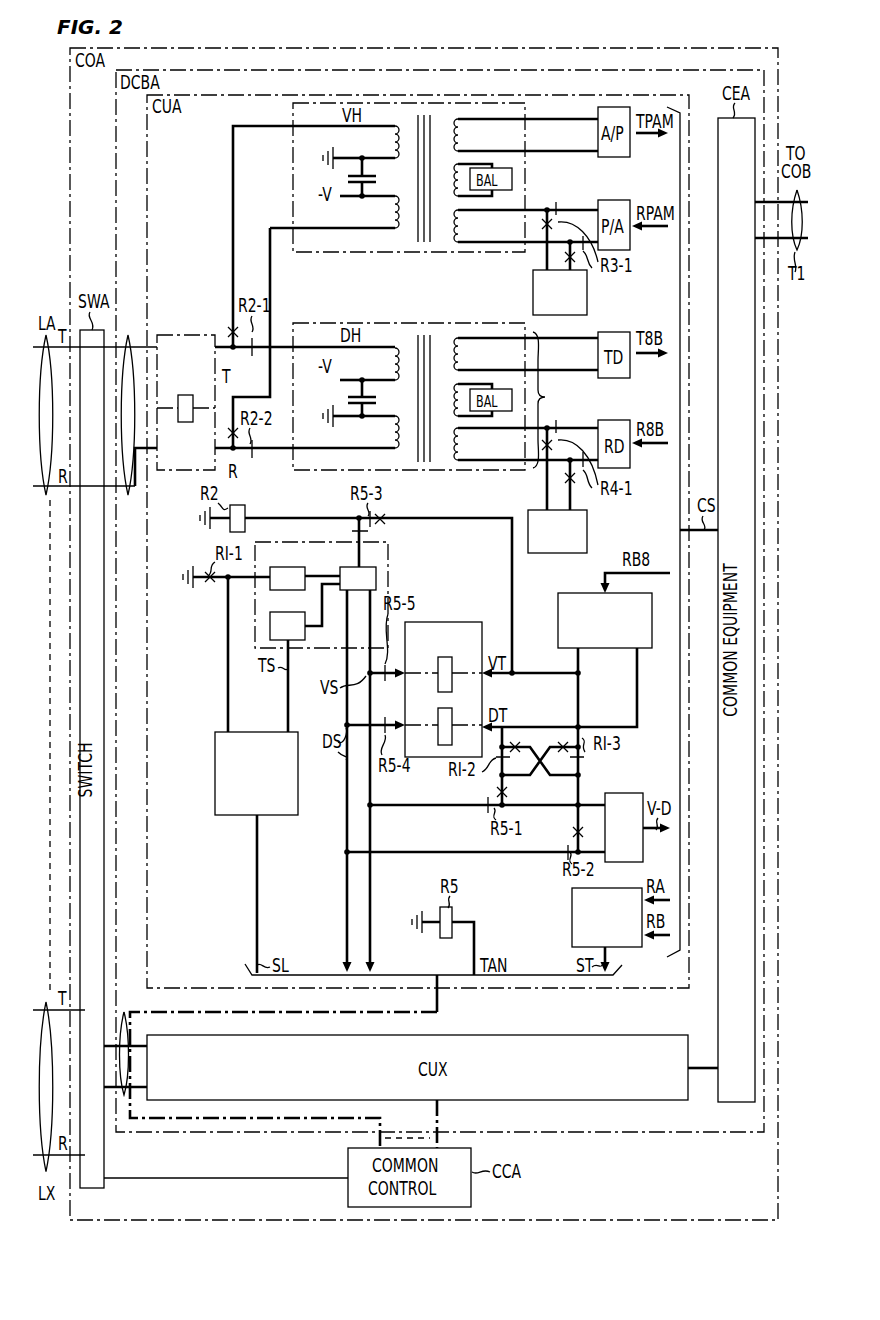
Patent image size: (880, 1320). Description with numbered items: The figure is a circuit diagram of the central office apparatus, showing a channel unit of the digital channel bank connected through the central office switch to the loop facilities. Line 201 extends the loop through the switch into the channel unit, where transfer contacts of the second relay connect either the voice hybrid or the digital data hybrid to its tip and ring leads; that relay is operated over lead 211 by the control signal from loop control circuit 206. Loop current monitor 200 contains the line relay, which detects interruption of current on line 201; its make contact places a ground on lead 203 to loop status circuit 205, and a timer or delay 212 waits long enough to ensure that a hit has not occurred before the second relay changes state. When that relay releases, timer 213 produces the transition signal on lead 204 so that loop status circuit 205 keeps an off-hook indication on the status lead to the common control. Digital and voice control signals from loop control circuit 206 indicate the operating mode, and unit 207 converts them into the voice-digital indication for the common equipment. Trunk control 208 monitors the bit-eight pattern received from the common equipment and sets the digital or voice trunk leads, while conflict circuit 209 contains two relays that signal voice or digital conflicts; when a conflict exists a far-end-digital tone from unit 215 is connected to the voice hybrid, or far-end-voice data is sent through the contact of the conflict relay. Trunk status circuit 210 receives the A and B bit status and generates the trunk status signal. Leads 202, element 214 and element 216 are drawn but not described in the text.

The loop current monitor 200 is at (175, 335).
The line 201 is at (130, 332).
The leads from switch to CUX 202 is at (122, 1018).
The lead 203 is at (226, 694).
The lead 204 is at (288, 706).
The loop status circuit 205 is at (213, 776).
The loop control circuit 206 is at (341, 593).
The voice/digital indication unit 207 is at (616, 794).
The trunk control 208 is at (557, 622).
The conflict circuit 209 is at (464, 622).
The trunk status circuit 210 is at (572, 915).
The lead 211 is at (262, 518).
The timer or delay 212 is at (287, 578).
The timer 213 is at (287, 626).
The loop control element 214 is at (358, 578).
The FED tone unit 215 is at (531, 288).
The FEV data circuit 216 is at (590, 541).